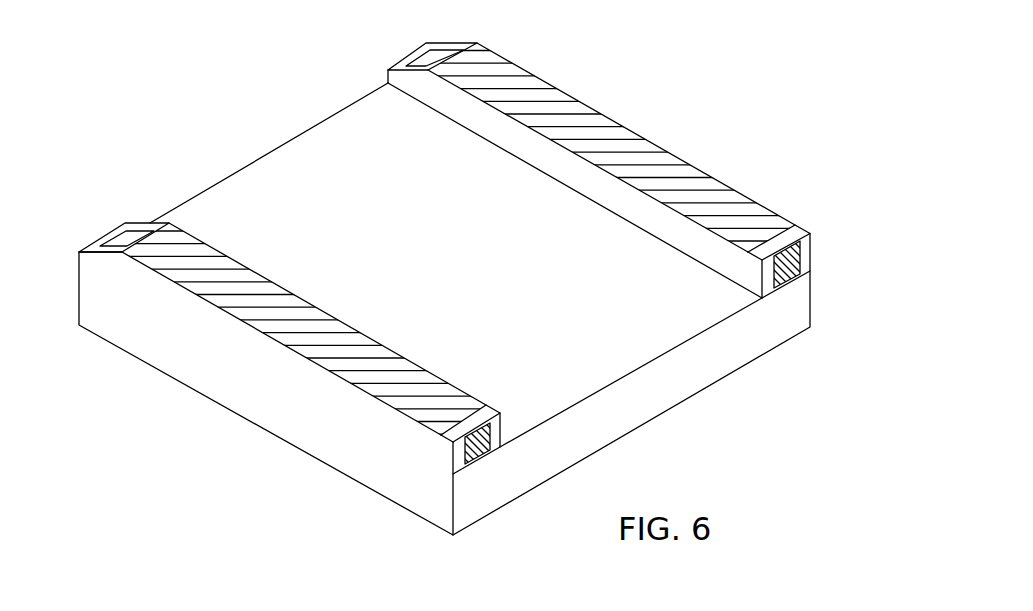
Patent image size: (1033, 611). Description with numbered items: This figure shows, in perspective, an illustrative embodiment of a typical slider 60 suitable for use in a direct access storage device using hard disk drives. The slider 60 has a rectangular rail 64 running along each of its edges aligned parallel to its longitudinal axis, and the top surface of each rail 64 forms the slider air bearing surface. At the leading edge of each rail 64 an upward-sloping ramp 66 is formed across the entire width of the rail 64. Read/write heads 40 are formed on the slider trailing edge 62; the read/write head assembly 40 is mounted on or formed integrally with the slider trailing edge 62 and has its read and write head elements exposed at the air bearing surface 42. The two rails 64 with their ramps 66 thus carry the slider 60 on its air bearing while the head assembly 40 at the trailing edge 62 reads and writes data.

The slider 60 is at (270, 464).
The slider trailing edge 62 is at (728, 362).
The rectangular rail 64 is at (542, 80).
The upward-sloping ramp 66 is at (403, 67).
The air bearing surface 42 is at (473, 418).
The read/write head assembly 40 is at (487, 452).